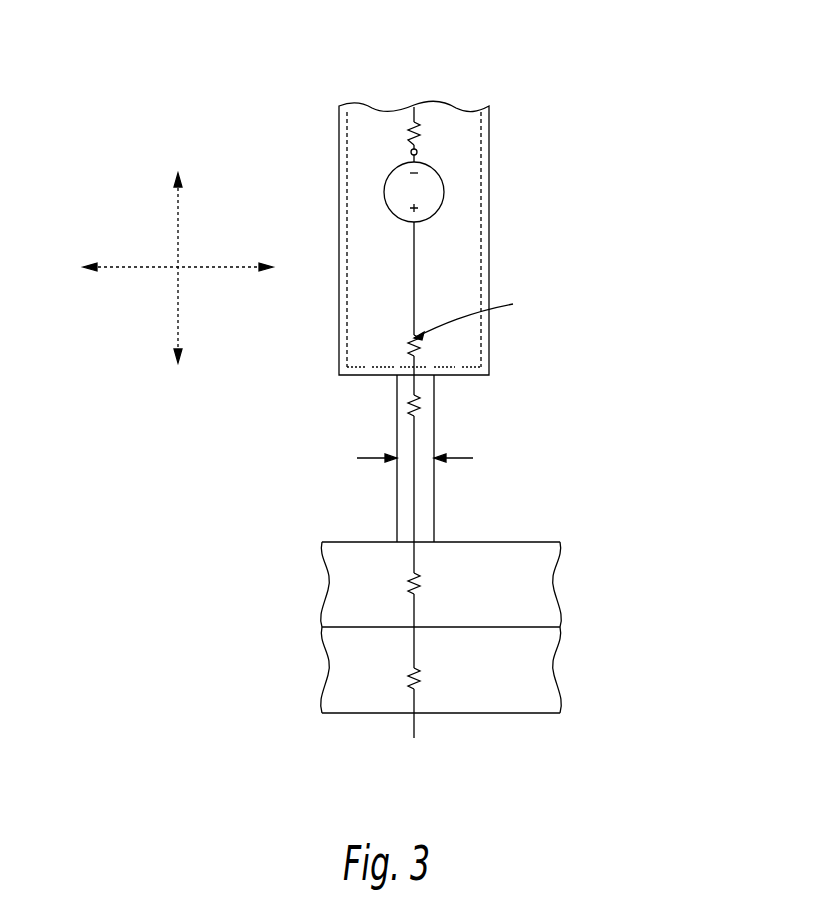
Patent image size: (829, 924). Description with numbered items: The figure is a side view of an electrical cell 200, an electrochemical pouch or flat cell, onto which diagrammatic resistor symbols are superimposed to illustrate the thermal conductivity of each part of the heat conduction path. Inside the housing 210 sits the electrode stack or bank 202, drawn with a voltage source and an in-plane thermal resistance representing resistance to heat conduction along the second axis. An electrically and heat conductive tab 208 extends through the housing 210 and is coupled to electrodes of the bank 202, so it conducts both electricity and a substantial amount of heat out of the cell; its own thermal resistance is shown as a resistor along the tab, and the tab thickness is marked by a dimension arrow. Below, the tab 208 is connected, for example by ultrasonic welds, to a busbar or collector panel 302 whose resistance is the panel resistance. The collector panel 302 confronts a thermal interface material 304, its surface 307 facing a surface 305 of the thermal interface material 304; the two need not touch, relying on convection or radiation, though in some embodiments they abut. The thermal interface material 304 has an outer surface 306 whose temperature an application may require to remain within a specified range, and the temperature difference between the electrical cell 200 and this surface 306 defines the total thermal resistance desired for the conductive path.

The electrical cell 200 is at (645, 53).
The electrode stack or bank 202 is at (481, 160).
The housing 210 is at (489, 228).
The tab 208 is at (436, 518).
The collector panel 302 is at (562, 562).
The thermal interface material 304 is at (559, 665).
The surface of the thermal interface material 305 is at (528, 626).
The surface of the thermal interface material 306 is at (513, 715).
The surface of the collector panel 307 is at (356, 626).